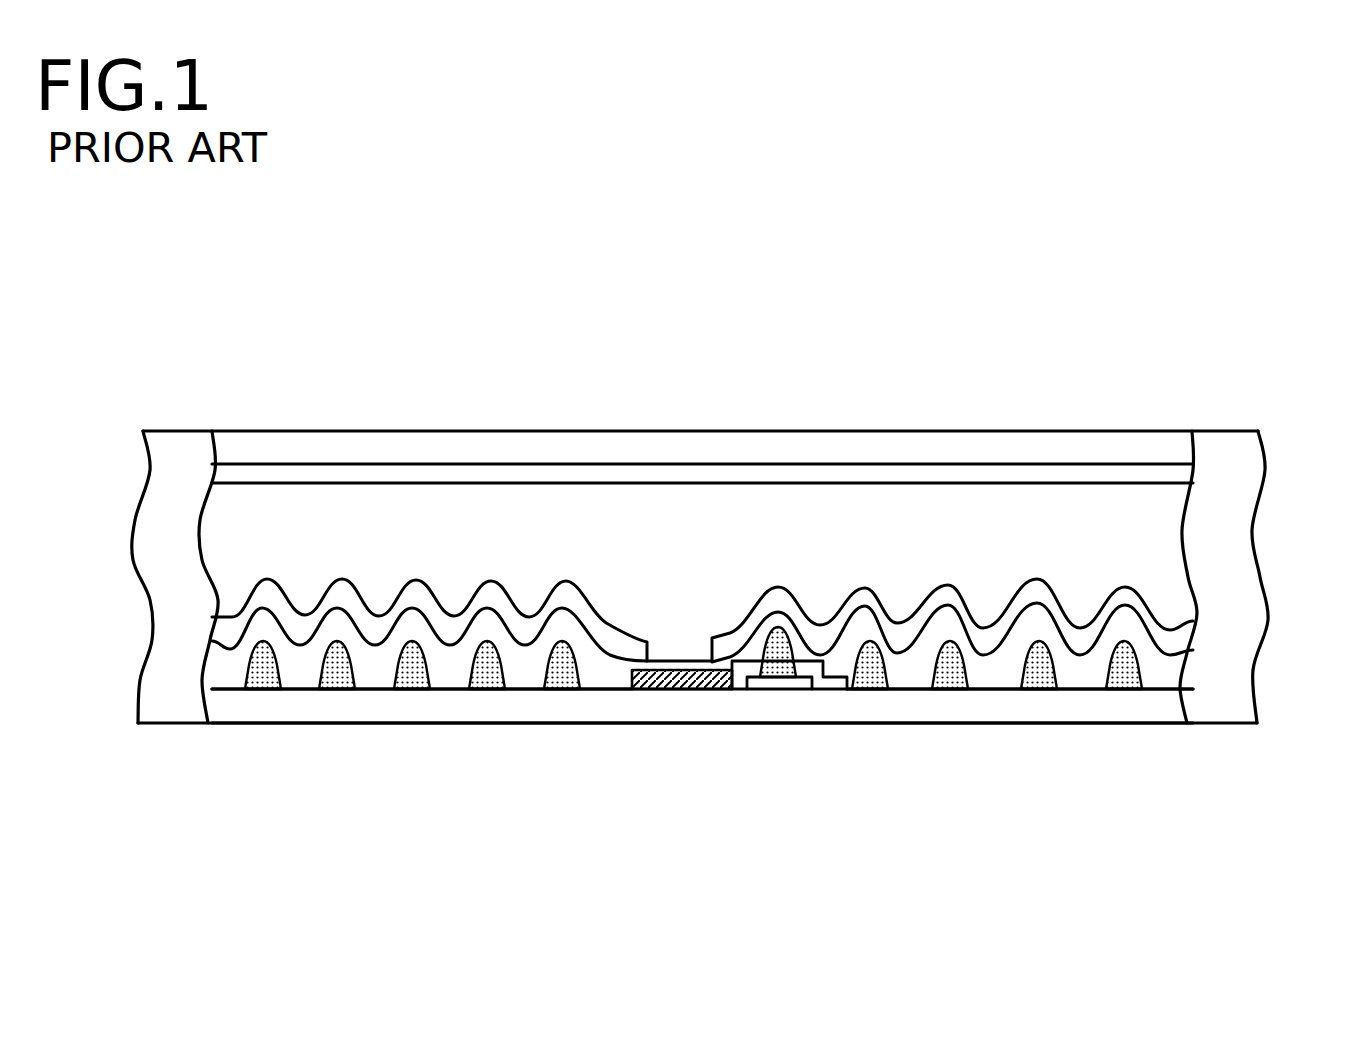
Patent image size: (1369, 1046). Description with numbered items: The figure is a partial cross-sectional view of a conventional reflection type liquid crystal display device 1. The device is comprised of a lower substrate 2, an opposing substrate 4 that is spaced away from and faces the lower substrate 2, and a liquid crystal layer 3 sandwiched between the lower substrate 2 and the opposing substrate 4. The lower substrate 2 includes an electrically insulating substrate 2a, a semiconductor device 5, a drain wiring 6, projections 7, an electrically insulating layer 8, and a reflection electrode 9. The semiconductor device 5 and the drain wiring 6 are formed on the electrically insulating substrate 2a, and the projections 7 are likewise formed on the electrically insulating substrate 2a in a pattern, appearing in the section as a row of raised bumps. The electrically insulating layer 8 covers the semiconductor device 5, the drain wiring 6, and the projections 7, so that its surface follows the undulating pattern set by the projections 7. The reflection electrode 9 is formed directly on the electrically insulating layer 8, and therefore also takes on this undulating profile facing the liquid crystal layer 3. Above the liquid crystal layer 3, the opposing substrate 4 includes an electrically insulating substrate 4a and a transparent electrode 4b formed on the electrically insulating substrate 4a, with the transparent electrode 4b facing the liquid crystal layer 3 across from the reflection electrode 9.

The reflection type liquid crystal display device 1 is at (353, 382).
The lower substrate 2 is at (780, 714).
The electrically insulating substrate 2a is at (917, 710).
The liquid crystal layer 3 is at (1020, 543).
The opposing substrate 4 is at (781, 416).
The electrically insulating substrate 4a is at (868, 447).
The transparent electrode 4b is at (702, 411).
The semiconductor device 5 is at (848, 740).
The drain wiring 6 is at (668, 689).
The projections 7 is at (262, 690).
The electrically insulating layer 8 is at (372, 690).
The reflection electrode 9 is at (531, 637).